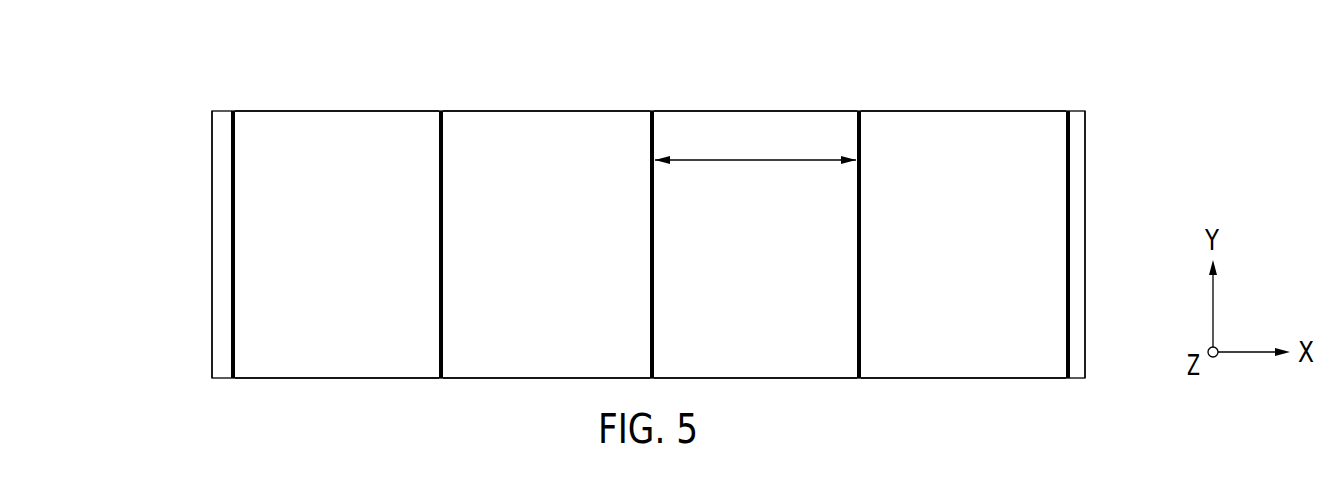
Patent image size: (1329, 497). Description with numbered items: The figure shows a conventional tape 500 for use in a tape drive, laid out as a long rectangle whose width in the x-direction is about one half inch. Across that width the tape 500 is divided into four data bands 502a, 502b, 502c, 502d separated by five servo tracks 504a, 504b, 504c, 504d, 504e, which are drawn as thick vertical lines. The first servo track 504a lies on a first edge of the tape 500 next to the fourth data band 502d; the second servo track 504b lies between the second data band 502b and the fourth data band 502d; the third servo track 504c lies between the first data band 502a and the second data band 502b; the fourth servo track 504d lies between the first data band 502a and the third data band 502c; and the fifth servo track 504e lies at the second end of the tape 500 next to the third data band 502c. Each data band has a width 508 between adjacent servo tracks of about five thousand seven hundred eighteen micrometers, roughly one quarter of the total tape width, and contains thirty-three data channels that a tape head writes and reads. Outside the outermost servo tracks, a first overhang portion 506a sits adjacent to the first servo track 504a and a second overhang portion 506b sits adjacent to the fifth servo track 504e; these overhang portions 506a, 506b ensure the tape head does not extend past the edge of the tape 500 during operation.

The tape 500 is at (154, 150).
The first data band 502a is at (787, 352).
The second data band 502b is at (557, 352).
The third data band 502c is at (1017, 352).
The fourth data band 502d is at (367, 352).
The first servo track 504a is at (233, 111).
The second servo track 504b is at (441, 111).
The third servo track 504c is at (652, 111).
The fourth servo track 504d is at (859, 111).
The fifth servo track 504e is at (1068, 111).
The first overhang portion 506a is at (225, 312).
The second overhang portion 506b is at (1076, 193).
The width 508 is at (755, 147).